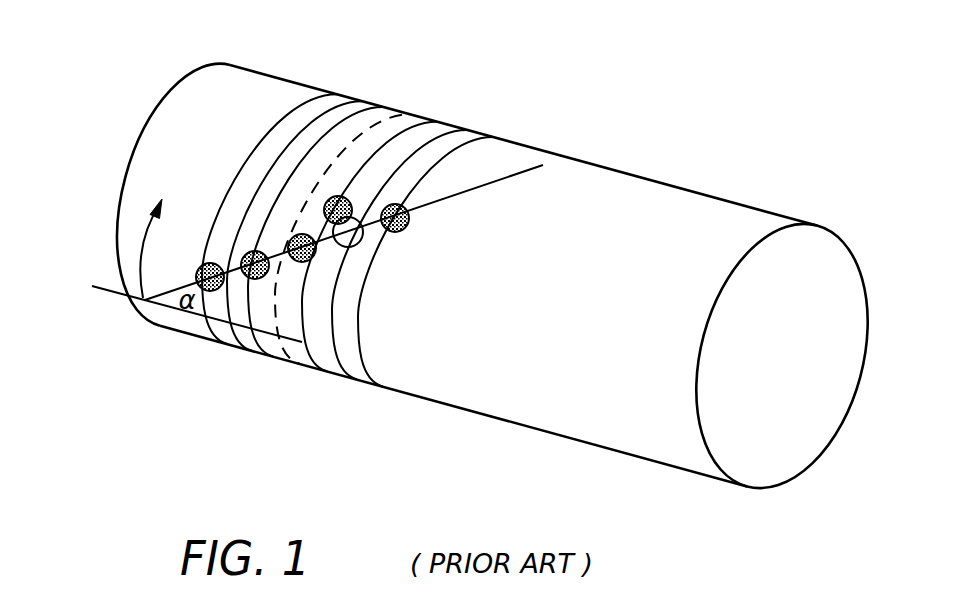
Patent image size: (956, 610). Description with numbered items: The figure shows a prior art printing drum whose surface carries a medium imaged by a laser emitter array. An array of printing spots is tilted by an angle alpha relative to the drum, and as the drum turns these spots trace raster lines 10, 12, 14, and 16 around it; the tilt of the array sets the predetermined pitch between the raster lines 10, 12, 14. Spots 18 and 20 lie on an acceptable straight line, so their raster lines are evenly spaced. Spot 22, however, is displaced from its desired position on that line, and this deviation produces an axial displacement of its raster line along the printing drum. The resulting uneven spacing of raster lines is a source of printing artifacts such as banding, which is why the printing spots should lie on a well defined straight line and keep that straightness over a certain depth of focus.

The raster line 10 is at (493, 137).
The raster line 12 is at (437, 122).
The raster line 14 is at (383, 107).
The raster line 16 is at (337, 94).
The spot 18 is at (409, 222).
The spot 20 is at (311, 261).
The spot 22 is at (370, 240).